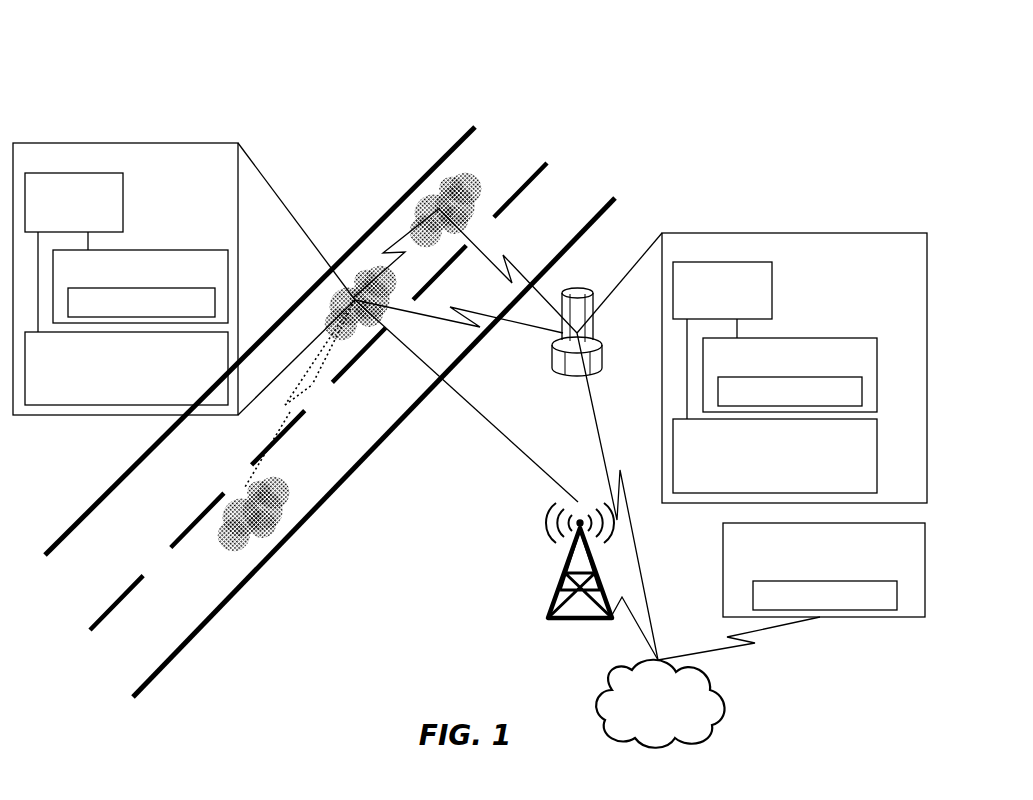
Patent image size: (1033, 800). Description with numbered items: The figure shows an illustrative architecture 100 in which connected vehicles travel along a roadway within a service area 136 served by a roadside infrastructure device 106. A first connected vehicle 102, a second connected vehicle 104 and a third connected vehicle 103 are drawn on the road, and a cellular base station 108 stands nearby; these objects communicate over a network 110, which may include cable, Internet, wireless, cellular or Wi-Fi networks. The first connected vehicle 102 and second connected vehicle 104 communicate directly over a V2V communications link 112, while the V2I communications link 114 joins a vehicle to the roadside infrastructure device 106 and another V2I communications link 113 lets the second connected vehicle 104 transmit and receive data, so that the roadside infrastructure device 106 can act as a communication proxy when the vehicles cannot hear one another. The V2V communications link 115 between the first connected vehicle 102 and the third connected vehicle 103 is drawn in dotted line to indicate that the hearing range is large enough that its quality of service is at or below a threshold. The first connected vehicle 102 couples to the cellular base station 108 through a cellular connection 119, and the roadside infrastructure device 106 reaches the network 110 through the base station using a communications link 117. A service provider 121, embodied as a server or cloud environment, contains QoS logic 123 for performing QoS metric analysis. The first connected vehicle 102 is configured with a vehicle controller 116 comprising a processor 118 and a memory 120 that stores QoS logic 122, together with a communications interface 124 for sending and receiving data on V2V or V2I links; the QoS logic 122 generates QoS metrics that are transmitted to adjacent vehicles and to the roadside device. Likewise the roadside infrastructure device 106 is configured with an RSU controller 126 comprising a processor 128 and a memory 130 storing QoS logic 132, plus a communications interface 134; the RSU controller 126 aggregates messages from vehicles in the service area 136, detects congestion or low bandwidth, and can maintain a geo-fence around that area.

The illustrative architecture 100 is at (879, 35).
The first connected vehicle 102 is at (358, 277).
The third connected vehicle 103 is at (248, 500).
The second connected vehicle 104 is at (453, 182).
The roadside infrastructure device 106 is at (590, 300).
The cellular base station 108 is at (570, 560).
The network 110 is at (660, 704).
The V2V communications link 112 is at (397, 245).
The V2I communications link 113 is at (503, 255).
The V2I communications link 114 is at (522, 323).
The V2V communications link 115 is at (300, 405).
The vehicle controller 116 is at (184, 279).
The communications link 117 is at (633, 540).
The processor 118 is at (74, 202).
The cellular connection 119 is at (550, 477).
The memory 120 is at (140, 286).
The service provider 121 is at (791, 591).
The QoS logic 122 is at (141, 302).
The QoS logic 123 is at (825, 595).
The communications interface 124 is at (126, 368).
The RSU controller 126 is at (752, 368).
The processor 128 is at (722, 290).
The memory 130 is at (790, 375).
The QoS logic 132 is at (790, 391).
The communications interface 134 is at (775, 456).
The service area 136 is at (674, 122).